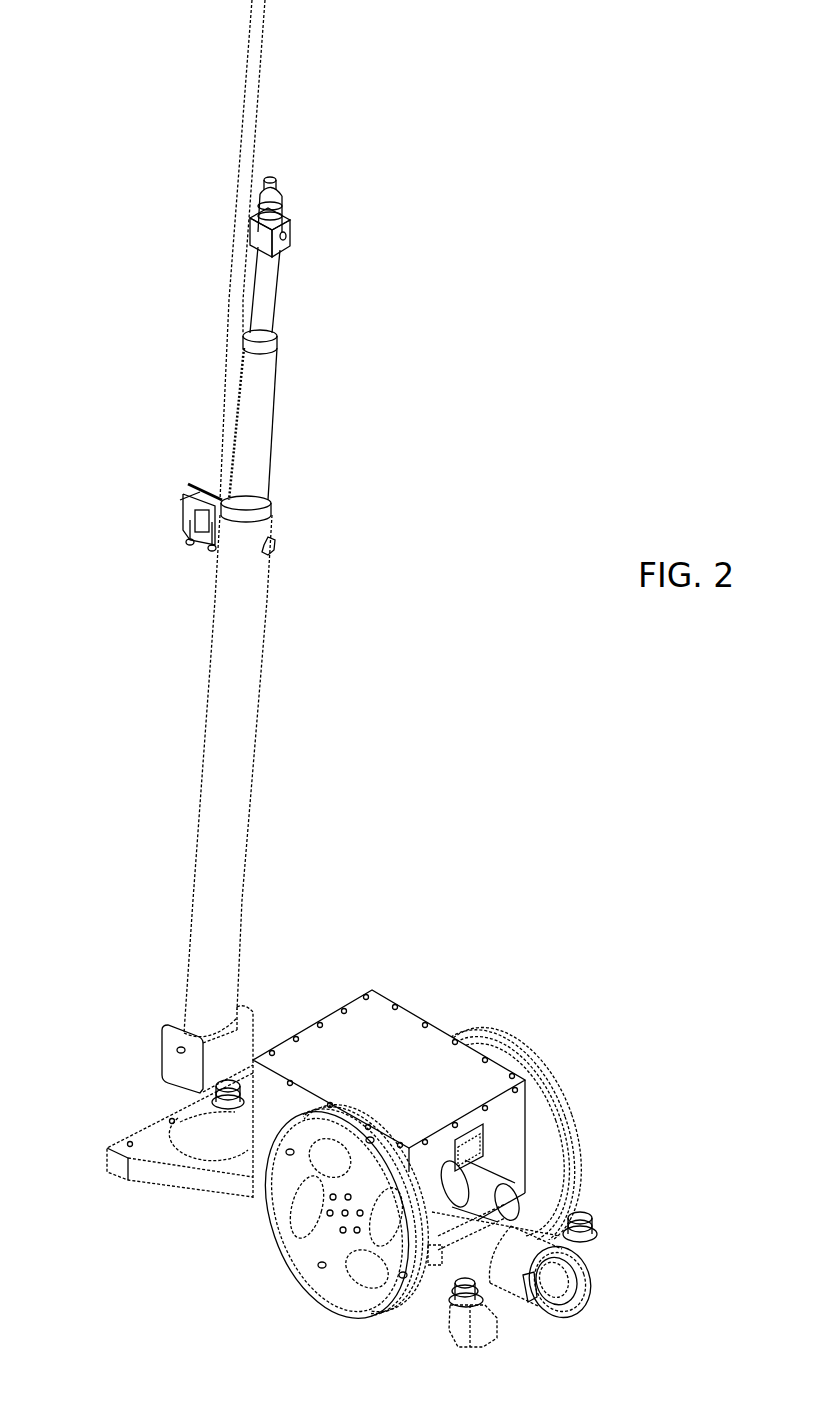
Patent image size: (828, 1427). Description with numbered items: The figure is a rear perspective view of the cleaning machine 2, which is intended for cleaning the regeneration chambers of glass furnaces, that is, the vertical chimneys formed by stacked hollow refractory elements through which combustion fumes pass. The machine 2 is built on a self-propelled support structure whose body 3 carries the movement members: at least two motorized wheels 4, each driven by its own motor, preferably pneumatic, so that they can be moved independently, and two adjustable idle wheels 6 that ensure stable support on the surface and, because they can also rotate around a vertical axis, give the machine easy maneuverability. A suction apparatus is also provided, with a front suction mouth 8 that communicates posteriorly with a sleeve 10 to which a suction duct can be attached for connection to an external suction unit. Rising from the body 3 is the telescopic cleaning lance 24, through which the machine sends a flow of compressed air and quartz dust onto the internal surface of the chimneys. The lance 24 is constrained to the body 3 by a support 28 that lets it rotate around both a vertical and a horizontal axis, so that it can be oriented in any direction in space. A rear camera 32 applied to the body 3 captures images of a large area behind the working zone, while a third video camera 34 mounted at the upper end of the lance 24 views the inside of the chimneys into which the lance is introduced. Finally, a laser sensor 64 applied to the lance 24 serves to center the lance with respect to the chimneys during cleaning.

The cleaning machine 2 is at (399, 978).
The body 3 is at (368, 1035).
The motorized wheels 4 is at (317, 1245).
The idle wheels 6 is at (468, 1332).
The front suction mouth 8 is at (162, 1173).
The sleeve 10 is at (565, 1287).
The cleaning lance 24 is at (258, 645).
The support 28 is at (180, 1065).
The rear camera 32 is at (465, 1143).
The third video camera 34 is at (272, 208).
The laser sensor 64 is at (247, 144).